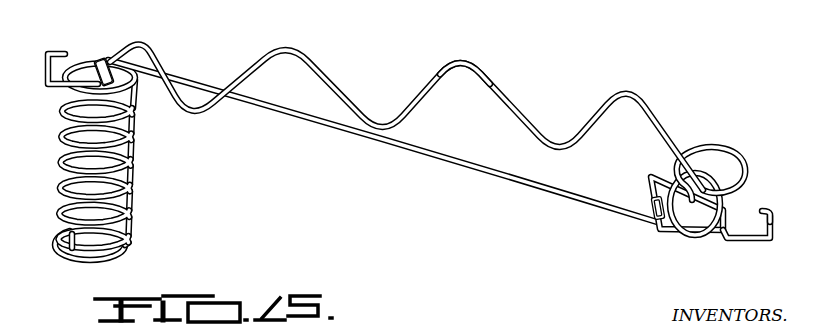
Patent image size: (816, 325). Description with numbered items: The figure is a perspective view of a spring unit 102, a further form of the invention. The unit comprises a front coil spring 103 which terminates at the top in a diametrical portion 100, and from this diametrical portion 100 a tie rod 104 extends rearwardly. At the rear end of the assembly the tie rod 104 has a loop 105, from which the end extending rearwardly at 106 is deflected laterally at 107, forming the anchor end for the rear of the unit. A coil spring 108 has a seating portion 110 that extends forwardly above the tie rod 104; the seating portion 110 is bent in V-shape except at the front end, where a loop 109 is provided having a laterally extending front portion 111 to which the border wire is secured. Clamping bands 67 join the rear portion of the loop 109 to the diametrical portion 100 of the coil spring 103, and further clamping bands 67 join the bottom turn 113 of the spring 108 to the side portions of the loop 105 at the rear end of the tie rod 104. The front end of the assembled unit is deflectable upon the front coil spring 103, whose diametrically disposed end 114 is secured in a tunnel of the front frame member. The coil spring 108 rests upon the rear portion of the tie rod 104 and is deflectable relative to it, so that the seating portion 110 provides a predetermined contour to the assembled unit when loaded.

The clamping bands 67 is at (107, 60).
The diametrical portion 100 is at (128, 106).
The spring unit 102 is at (345, 80).
The front coil spring 103 is at (128, 203).
The tie rod 104 is at (312, 128).
The loop 105 is at (652, 177).
The rearwardly extending end 106 is at (754, 242).
The laterally deflected anchor end 107 is at (771, 213).
The coil spring 108 is at (727, 146).
The loop 109 is at (93, 60).
The seating portion 110 is at (478, 70).
The laterally extending front portion 111 is at (55, 48).
The bottom turn 113 is at (686, 240).
The diametrically disposed end 114 is at (63, 246).